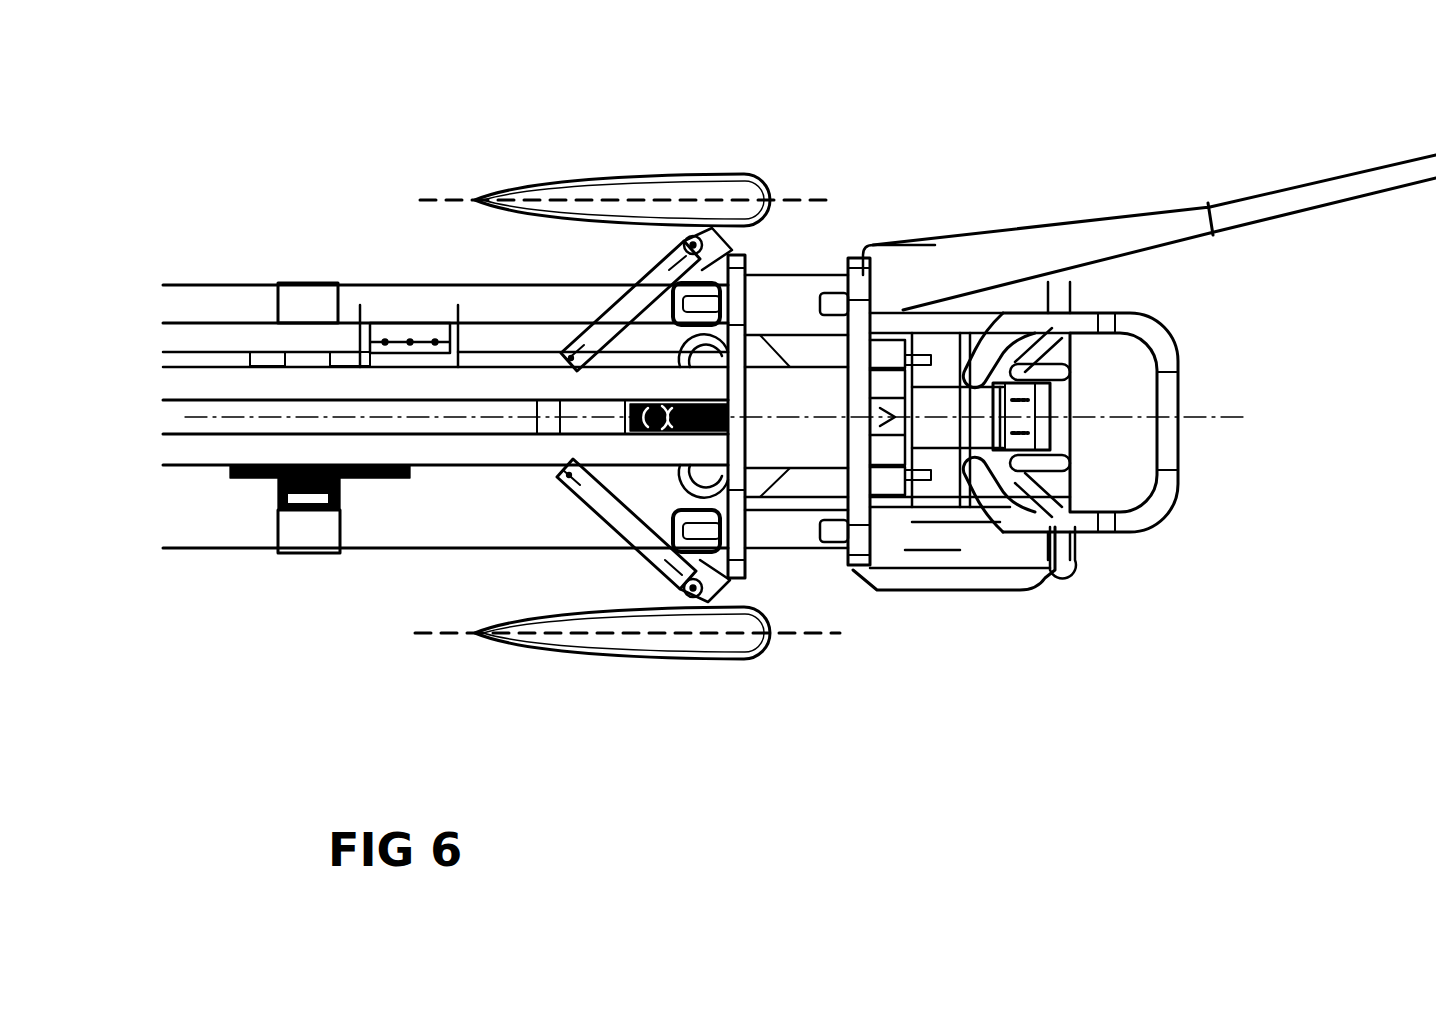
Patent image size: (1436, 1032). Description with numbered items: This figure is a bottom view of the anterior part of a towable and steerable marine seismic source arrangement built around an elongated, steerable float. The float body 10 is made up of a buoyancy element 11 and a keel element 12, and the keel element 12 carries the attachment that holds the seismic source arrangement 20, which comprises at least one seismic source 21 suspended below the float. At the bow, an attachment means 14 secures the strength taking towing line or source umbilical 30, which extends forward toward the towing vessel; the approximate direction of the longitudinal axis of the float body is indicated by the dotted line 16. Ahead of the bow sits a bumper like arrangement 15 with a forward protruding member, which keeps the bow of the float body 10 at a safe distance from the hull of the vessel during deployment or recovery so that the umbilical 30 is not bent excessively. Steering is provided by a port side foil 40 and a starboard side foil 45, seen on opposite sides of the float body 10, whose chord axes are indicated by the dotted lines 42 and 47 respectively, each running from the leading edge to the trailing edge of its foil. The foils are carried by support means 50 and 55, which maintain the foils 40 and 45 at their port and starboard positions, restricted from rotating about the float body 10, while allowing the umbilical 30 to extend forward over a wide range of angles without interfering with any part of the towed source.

The float body 10 is at (427, 287).
The buoyancy element 11 is at (373, 302).
The keel element 12 is at (305, 425).
The attachment means 14 is at (887, 345).
The bumper like arrangement 15 is at (1063, 555).
The longitudinal axis of the float body 16 is at (1133, 422).
The seismic source arrangement 20 is at (428, 468).
The seismic source 21 is at (790, 540).
The strength taking towing line or source umbilical 30 is at (1297, 215).
The port side foil 40 is at (698, 637).
The chord axis of the port side foil 42 is at (627, 656).
The starboard side foil 45 is at (692, 205).
The chord axis of the starboard side foil 47 is at (635, 181).
The support means for the port side foil 50 is at (640, 265).
The support means for the starboard side foil 55 is at (640, 560).